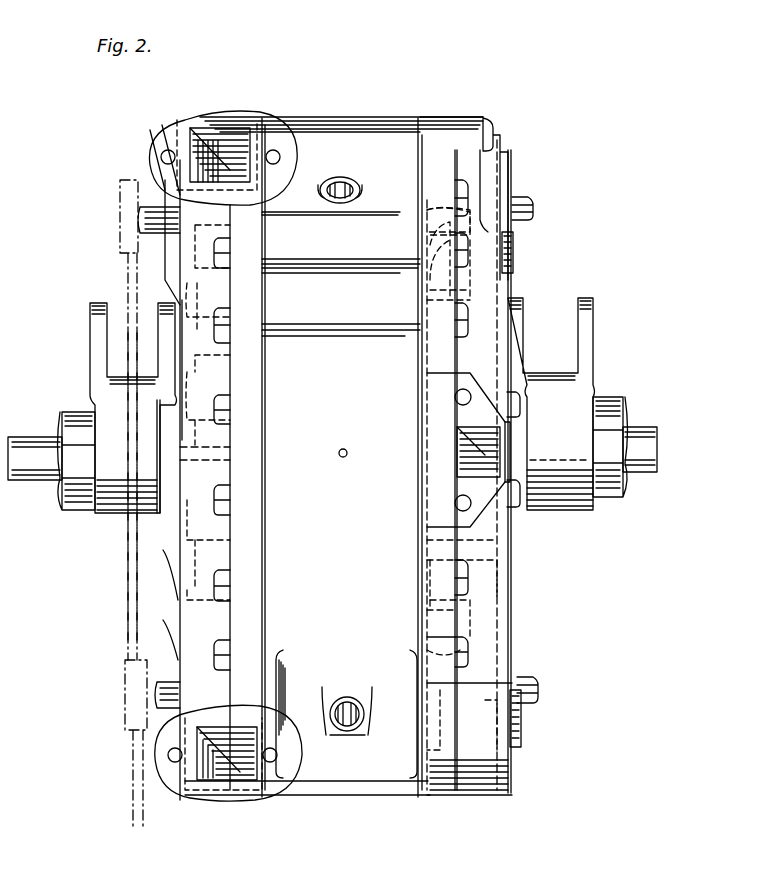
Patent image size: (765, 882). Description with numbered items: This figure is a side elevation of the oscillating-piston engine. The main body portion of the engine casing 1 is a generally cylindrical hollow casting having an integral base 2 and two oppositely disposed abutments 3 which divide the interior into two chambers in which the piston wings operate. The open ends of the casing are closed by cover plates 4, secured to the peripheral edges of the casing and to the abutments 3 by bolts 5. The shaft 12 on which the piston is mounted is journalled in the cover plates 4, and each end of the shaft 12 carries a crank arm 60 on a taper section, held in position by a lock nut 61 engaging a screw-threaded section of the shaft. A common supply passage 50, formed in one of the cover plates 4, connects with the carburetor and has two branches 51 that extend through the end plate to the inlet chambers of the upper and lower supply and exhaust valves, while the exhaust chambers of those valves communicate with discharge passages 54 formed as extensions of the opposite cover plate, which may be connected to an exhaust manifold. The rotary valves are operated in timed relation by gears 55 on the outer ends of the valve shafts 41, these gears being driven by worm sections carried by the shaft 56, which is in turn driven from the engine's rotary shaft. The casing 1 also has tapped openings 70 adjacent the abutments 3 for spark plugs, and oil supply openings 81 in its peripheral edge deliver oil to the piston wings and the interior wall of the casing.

The main body portion of the engine casing 1 is at (334, 457).
The base 2 is at (398, 760).
The abutments 3 is at (342, 838).
The cover plates 4 is at (463, 131).
The bolts 5 is at (467, 195).
The shaft 12 is at (657, 447).
The shafts 41 is at (192, 125).
The common supply passage 50 is at (465, 462).
The branches 51 is at (485, 250).
The discharge passages 54 is at (228, 140).
The gears 55 is at (125, 245).
The shaft 56 is at (132, 287).
The crank arm 60 is at (342, 405).
The lock nut 61 is at (85, 505).
The tapped openings 70 is at (345, 187).
The oil supply openings 81 is at (347, 450).